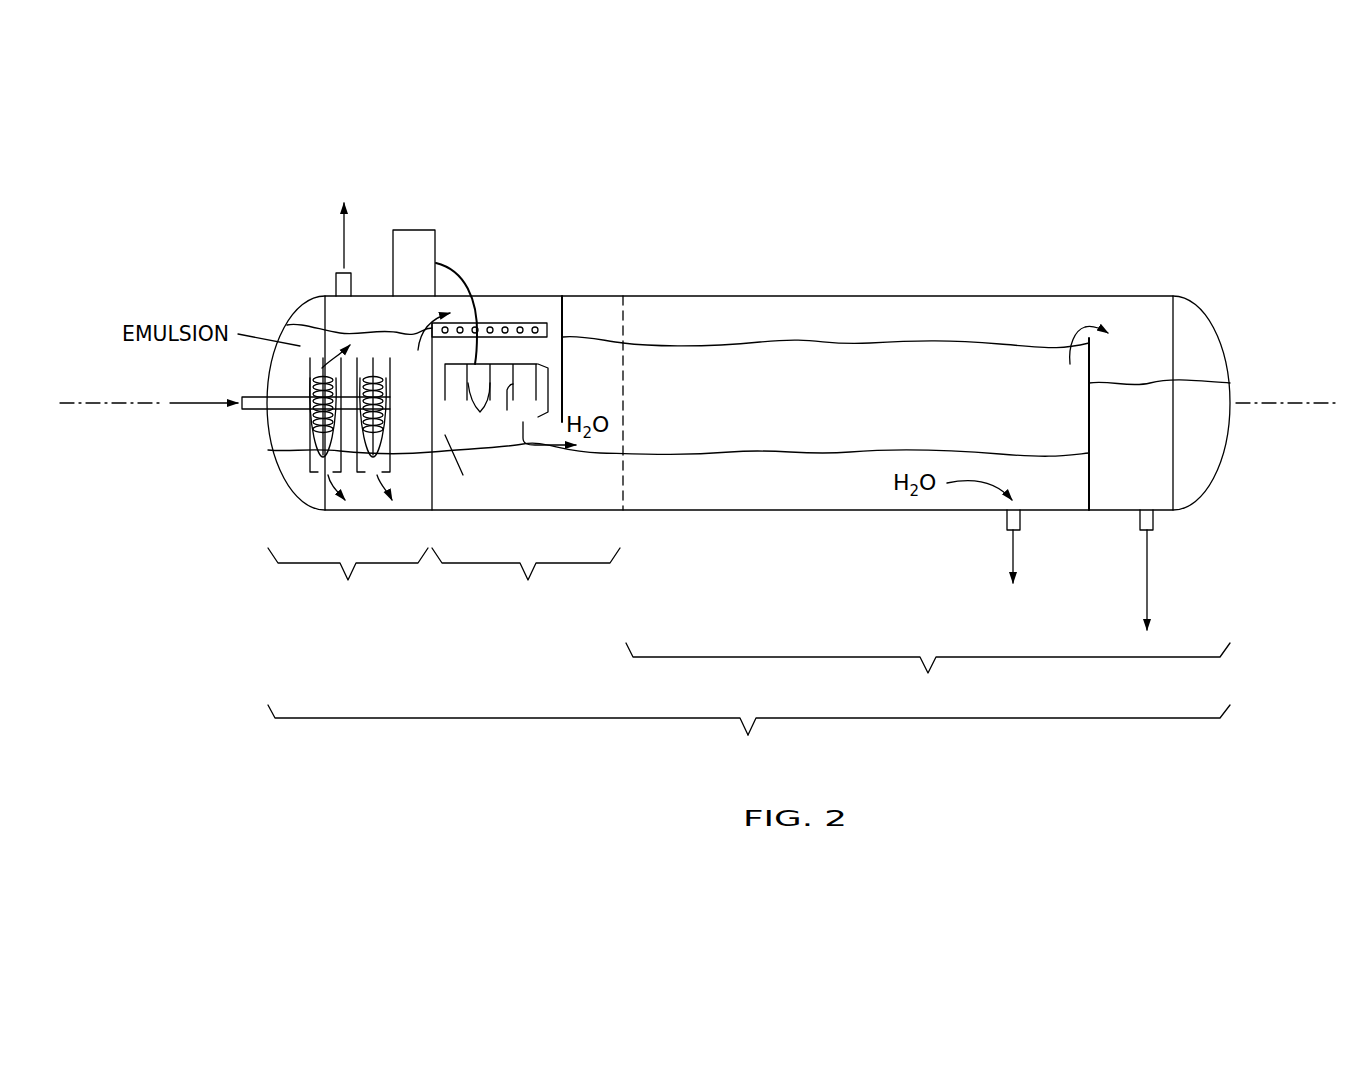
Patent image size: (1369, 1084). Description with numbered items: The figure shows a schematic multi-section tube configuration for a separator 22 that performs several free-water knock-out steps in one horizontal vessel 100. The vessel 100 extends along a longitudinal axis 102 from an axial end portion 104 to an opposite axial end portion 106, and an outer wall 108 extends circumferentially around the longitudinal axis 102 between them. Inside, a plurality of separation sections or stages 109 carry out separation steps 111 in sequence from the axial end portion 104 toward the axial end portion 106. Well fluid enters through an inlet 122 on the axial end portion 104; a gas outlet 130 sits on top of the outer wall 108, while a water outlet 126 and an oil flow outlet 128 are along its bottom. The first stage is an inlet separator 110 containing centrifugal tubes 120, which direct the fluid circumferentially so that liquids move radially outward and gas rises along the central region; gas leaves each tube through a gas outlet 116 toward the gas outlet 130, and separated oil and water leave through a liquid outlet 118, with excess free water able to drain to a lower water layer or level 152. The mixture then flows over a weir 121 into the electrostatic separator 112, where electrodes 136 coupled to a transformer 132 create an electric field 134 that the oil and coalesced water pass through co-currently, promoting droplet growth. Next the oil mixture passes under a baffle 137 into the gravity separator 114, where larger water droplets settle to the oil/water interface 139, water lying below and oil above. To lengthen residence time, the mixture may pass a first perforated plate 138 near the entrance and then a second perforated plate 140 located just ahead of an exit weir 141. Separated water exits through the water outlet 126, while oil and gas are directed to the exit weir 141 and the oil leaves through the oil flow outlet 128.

The separator 22 is at (262, 210).
The vessel 100 is at (804, 292).
The longitudinal axis 102 is at (1262, 399).
The axial end portion 104 is at (292, 313).
The axial end portion 106 is at (1210, 316).
The outer wall 108 is at (863, 292).
The separation sections or stages 109 is at (511, 736).
The separation steps 111 is at (989, 736).
The inlet separator 110 is at (348, 580).
The electrostatic separator 112 is at (526, 580).
The gravity separator 114 is at (928, 674).
The gas outlet 116 is at (420, 328).
The liquid outlet 118 is at (362, 477).
The centrifugal tubes 120 is at (393, 433).
The weir 121 is at (432, 480).
The inlet 122 is at (268, 398).
The water outlet 126 is at (1002, 520).
The oil flow outlet 128 is at (1137, 520).
The gas outlet 130 is at (339, 270).
The transformer 132 is at (413, 230).
The electric field 134 is at (552, 390).
The electrodes 136 is at (536, 383).
The baffle 137 is at (563, 317).
The first perforated plate 138 is at (623, 360).
The oil/water interface 139 is at (604, 456).
The second perforated plate 140 is at (1035, 367).
The exit weir 141 is at (1092, 437).
The lower water layer or level 152 is at (839, 482).